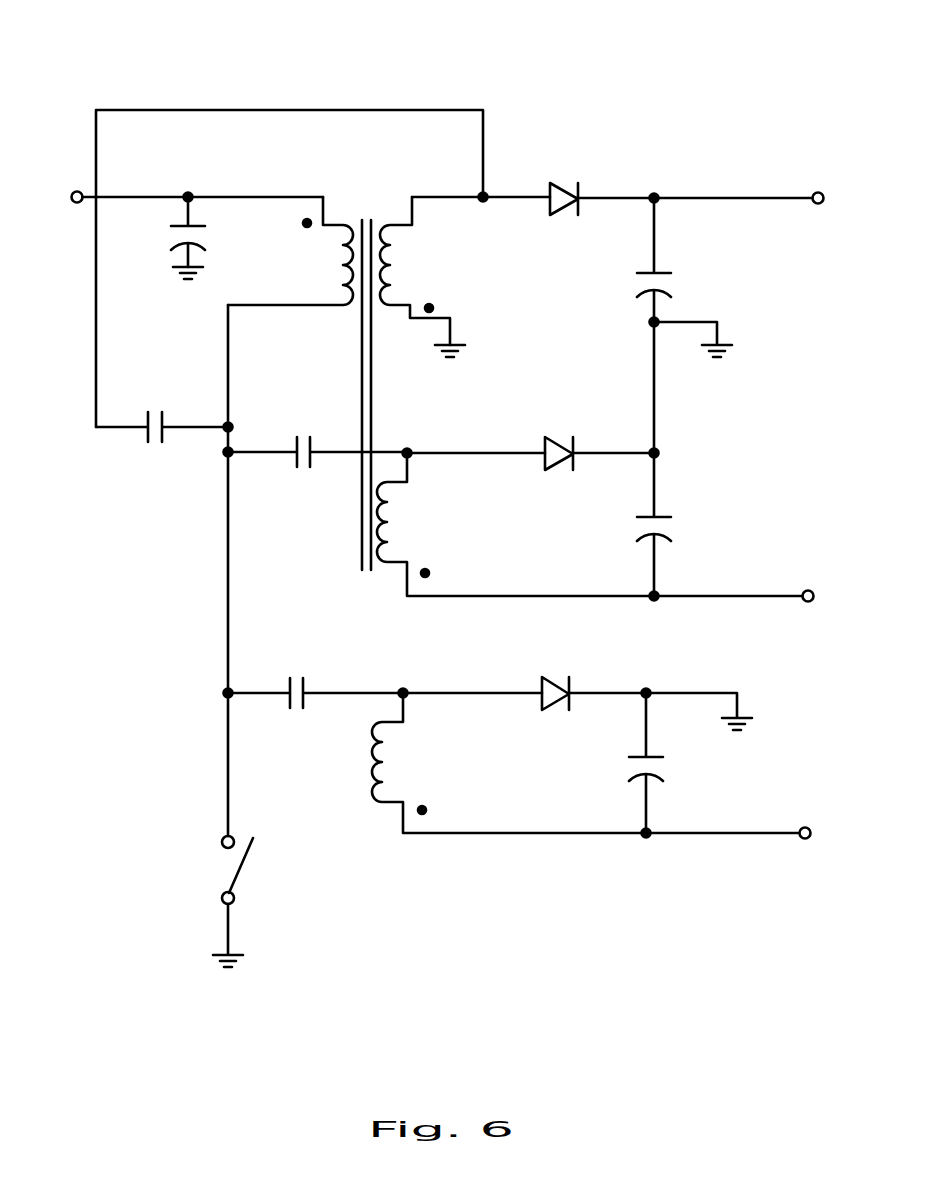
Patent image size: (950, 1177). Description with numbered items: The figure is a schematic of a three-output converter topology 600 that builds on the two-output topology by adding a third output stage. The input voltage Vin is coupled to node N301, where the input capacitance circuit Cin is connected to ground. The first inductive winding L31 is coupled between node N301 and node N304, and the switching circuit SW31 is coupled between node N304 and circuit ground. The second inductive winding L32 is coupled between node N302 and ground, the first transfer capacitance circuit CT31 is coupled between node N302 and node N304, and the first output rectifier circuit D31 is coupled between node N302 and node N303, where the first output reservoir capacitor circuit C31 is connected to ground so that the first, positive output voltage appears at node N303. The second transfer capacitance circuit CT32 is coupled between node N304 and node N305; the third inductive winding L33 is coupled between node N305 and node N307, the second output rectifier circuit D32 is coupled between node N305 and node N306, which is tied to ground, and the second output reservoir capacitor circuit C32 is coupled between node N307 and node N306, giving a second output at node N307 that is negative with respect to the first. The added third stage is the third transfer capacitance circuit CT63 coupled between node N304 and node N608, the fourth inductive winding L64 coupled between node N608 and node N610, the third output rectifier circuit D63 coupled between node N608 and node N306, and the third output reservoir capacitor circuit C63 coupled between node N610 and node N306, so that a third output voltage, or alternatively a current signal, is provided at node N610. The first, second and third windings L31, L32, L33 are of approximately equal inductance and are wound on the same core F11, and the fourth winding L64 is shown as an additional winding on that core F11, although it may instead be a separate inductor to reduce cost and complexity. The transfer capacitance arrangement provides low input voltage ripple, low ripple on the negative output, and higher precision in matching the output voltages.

The three-output converter topology 600 is at (642, 73).
The input voltage Vin is at (106, 197).
The input capacitance circuit Cin is at (170, 238).
The node N301 is at (288, 195).
The node N302 is at (483, 195).
The node N303 is at (654, 196).
The node N304 is at (228, 530).
The node N305 is at (407, 450).
The node N306 is at (656, 453).
The node N307 is at (659, 592).
The node N608 is at (404, 688).
The node N610 is at (652, 830).
The first inductive winding L31 is at (340, 277).
The second inductive winding L32 is at (397, 258).
The third inductive winding L33 is at (392, 517).
The fourth inductive winding L64 is at (388, 757).
The core F11 is at (360, 575).
The first output rectifier circuit D31 is at (553, 183).
The second output rectifier circuit D32 is at (553, 437).
The third output rectifier circuit D63 is at (548, 680).
The first output reservoir capacitor circuit C31 is at (633, 283).
The second output reservoir capacitor circuit C32 is at (672, 527).
The third output reservoir capacitor circuit C63 is at (623, 768).
The first transfer capacitance circuit CT31 is at (156, 403).
The second transfer capacitance circuit CT32 is at (302, 430).
The third transfer capacitance circuit CT63 is at (299, 672).
The switching circuit SW31 is at (220, 868).